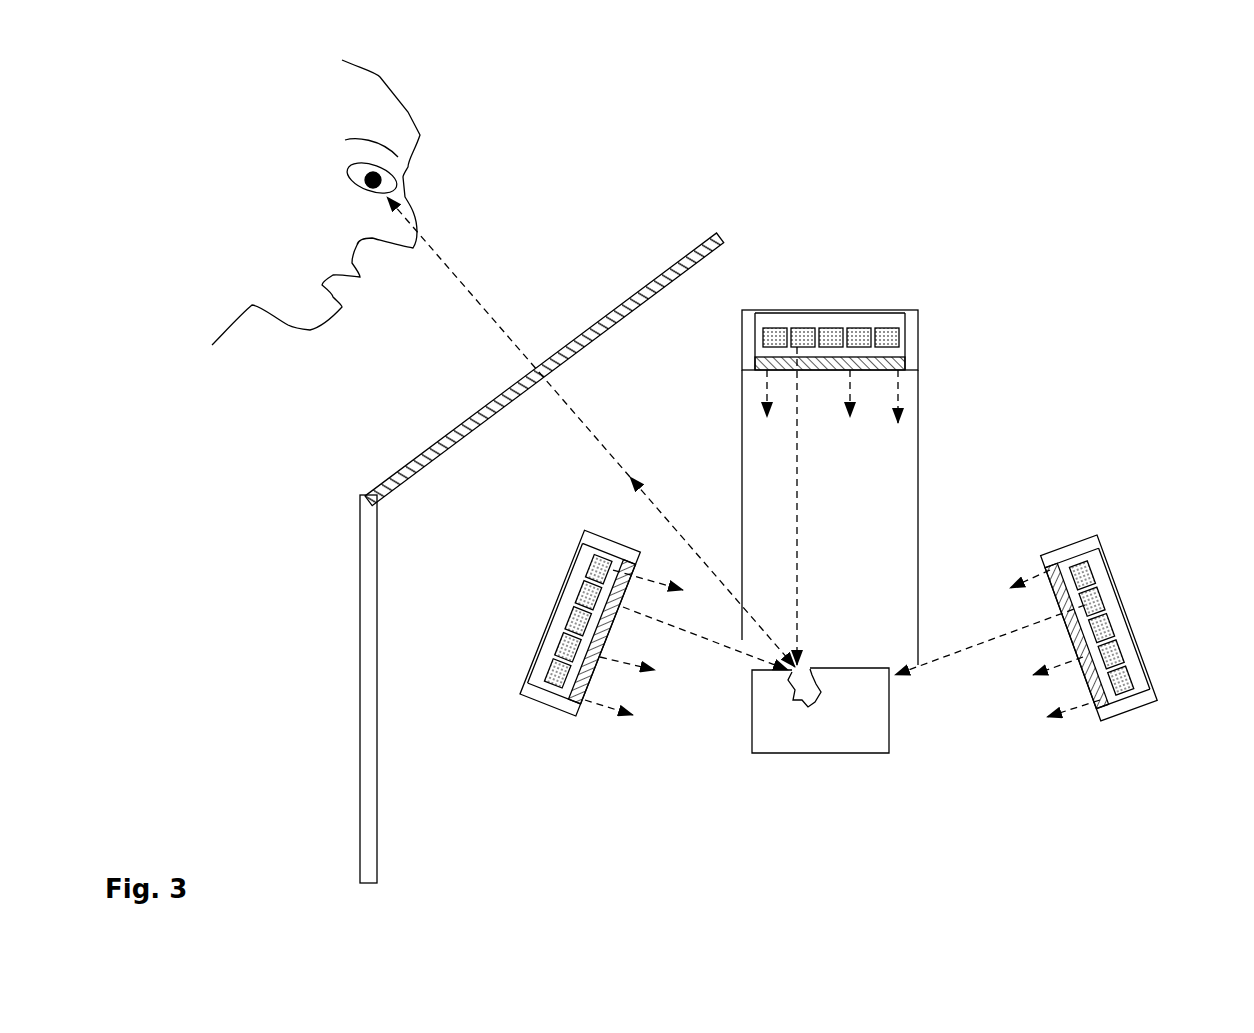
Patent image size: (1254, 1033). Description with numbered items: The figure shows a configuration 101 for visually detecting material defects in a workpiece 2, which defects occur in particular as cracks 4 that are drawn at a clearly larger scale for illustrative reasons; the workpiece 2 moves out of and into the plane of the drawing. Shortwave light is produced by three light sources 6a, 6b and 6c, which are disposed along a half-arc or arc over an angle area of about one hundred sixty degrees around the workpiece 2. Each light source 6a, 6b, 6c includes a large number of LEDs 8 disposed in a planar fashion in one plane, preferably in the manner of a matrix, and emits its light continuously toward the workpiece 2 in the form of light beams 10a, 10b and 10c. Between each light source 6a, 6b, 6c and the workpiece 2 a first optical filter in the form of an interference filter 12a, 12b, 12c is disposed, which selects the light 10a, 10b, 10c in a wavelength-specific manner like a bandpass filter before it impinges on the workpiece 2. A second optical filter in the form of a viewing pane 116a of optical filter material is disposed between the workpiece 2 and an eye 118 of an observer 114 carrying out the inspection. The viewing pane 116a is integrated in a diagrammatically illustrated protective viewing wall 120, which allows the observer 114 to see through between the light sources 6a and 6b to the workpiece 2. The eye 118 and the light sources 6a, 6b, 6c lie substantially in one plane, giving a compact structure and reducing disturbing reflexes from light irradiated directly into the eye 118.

The configuration 101 is at (1035, 133).
The observer 114 is at (443, 132).
The eye 118 is at (385, 177).
The viewing pane 116a is at (423, 442).
The protective viewing wall 120 is at (368, 628).
The light source 6a is at (532, 647).
The light source 6b is at (857, 293).
The light source 6c is at (1148, 618).
The LEDs 8 is at (830, 338).
The interference filter 12a is at (597, 662).
The interference filter 12b is at (863, 372).
The interference filter 12c is at (1082, 678).
The light beam 10a is at (695, 633).
The light beam 10b is at (797, 413).
The light beam 10c is at (958, 653).
The workpiece 2 is at (843, 738).
The cracks 4 is at (800, 693).